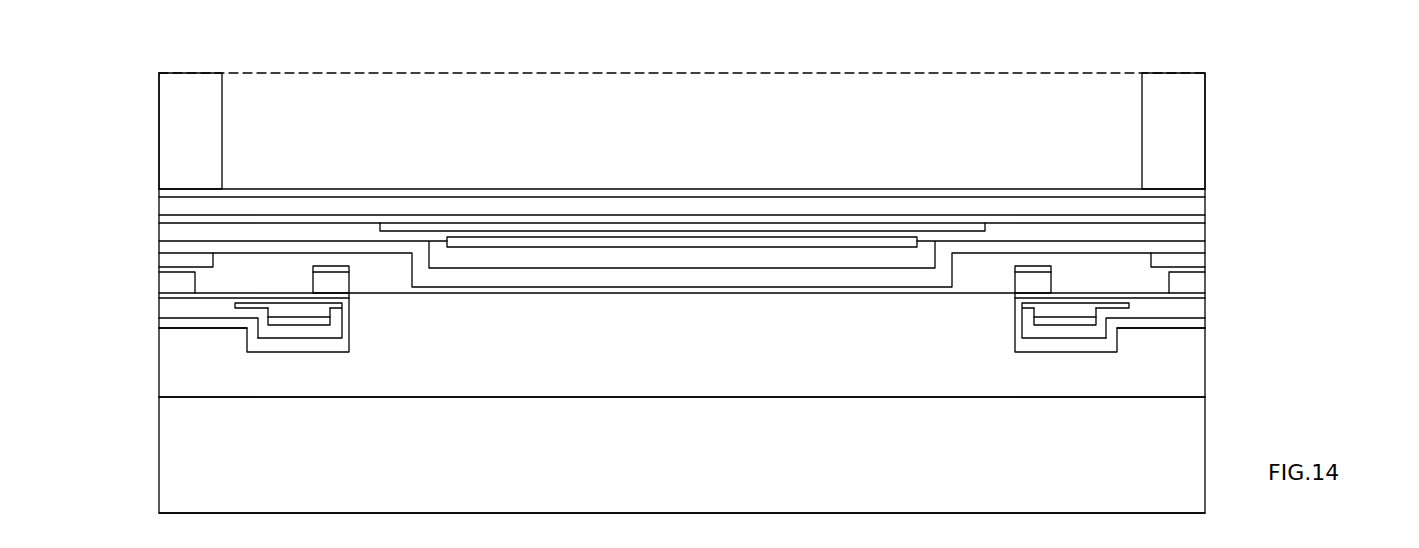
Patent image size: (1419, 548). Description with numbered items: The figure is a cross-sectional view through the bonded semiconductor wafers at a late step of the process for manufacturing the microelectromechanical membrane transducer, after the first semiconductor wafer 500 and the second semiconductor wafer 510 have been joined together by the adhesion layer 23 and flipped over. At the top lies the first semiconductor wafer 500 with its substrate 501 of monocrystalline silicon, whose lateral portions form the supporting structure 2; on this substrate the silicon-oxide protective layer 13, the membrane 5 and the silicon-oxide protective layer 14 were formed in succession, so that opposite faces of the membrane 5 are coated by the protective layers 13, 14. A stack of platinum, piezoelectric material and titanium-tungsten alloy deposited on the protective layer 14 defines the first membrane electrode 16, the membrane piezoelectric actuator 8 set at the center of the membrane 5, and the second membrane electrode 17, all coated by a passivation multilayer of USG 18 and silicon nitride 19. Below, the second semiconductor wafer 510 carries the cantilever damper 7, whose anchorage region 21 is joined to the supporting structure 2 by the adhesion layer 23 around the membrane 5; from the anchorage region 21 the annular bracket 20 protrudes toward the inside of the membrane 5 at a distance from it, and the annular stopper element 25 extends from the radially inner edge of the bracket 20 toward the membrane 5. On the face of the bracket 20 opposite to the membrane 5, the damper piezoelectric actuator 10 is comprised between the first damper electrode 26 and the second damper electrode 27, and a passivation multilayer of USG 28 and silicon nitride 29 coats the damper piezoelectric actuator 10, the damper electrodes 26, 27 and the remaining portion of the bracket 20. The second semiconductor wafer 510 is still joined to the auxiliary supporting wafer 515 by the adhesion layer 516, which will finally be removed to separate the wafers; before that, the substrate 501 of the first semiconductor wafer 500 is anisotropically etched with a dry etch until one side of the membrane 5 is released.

The supporting structure 2 is at (160, 92).
The first semiconductor wafer 500 is at (272, 56).
The substrate 501 is at (345, 88).
The membrane 5 is at (470, 212).
The cantilever damper 7 is at (168, 376).
The membrane piezoelectric actuator 8 is at (715, 236).
The damper piezoelectric actuator 10 is at (293, 314).
The protective layer 13 is at (1040, 188).
The protective layer 14 is at (1100, 217).
The first membrane electrode 16 is at (417, 222).
The second membrane electrode 17 is at (487, 246).
The USG layer 18 is at (793, 257).
The silicon nitride layer 19 is at (847, 275).
The bracket 20 is at (212, 300).
The anchorage region 21 is at (146, 282).
The adhesion layer 23 is at (158, 262).
The stopper element 25 is at (299, 282).
The first damper electrode 26 is at (256, 305).
The second damper electrode 27 is at (318, 327).
The USG layer 28 is at (160, 307).
The silicon nitride layer 29 is at (300, 343).
The second semiconductor wafer 510 is at (129, 319).
The auxiliary supporting wafer 515 is at (213, 502).
The adhesion layer 516 is at (678, 365).